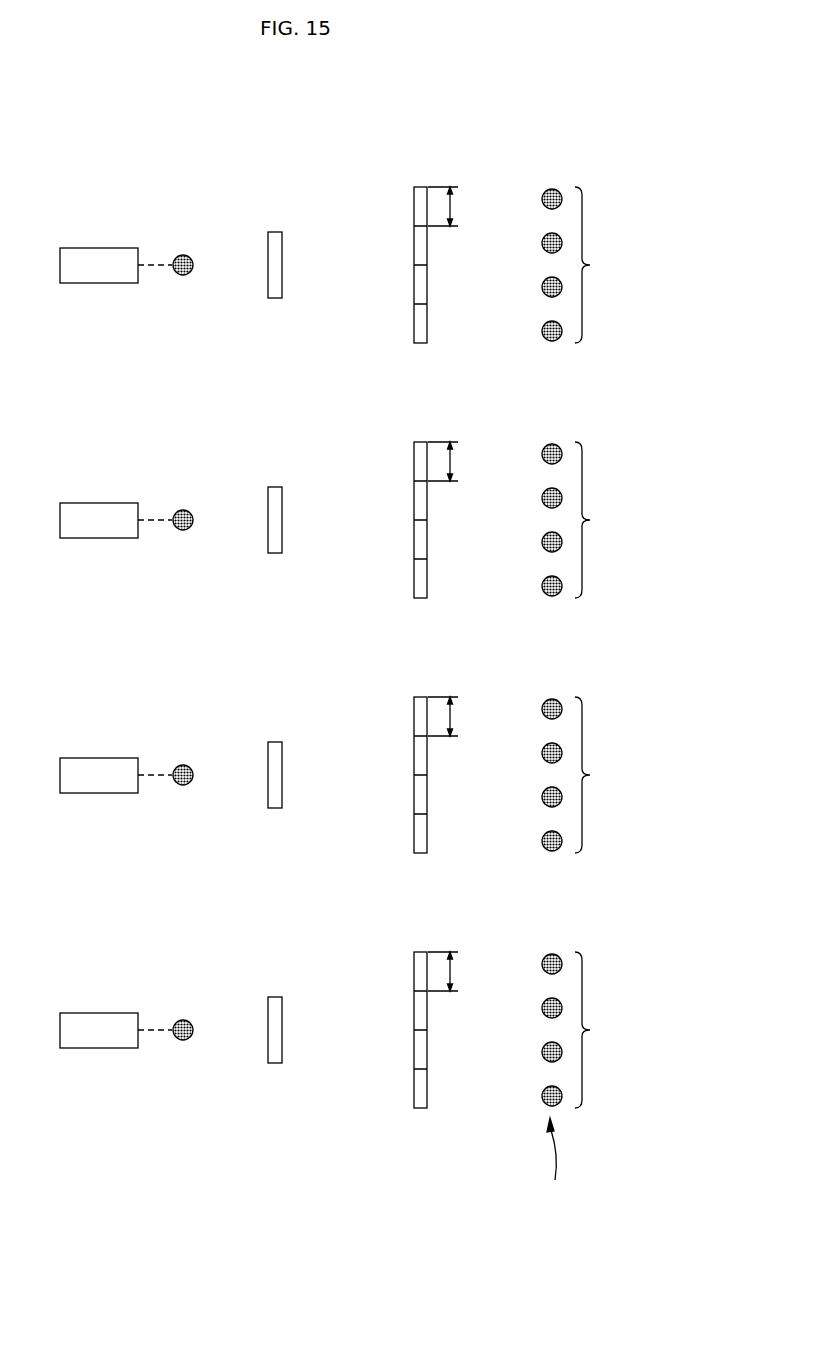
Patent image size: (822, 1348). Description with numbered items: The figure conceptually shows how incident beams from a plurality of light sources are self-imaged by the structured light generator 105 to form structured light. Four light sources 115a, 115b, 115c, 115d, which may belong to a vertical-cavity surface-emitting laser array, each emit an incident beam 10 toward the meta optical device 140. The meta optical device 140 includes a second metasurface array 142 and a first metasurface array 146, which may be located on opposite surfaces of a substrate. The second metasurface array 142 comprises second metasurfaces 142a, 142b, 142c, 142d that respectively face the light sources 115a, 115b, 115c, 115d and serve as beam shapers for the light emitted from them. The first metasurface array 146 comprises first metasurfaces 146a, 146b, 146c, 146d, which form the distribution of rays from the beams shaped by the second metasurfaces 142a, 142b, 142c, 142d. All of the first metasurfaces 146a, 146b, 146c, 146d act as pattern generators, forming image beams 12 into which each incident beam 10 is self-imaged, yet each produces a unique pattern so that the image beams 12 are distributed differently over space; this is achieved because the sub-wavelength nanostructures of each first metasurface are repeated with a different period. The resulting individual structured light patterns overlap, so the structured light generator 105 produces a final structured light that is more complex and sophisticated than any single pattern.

The structured light generator 105 is at (597, 118).
The light source 115a is at (97, 255).
The light source 115b is at (97, 510).
The light source 115c is at (97, 765).
The light source 115d is at (97, 1020).
The incident beam 10 is at (183, 255).
The second metasurface 142a is at (277, 232).
The second metasurface 142b is at (277, 487).
The second metasurface 142c is at (277, 742).
The second metasurface 142d is at (277, 997).
The first metasurface 146a is at (423, 195).
The first metasurface 146b is at (423, 450).
The first metasurface 146c is at (423, 705).
The first metasurface 146d is at (423, 960).
The image beam 12 is at (553, 190).
The second metasurface array 142 is at (273, 691).
The first metasurface array 146 is at (420, 671).
The meta optical device 140 is at (347, 694).